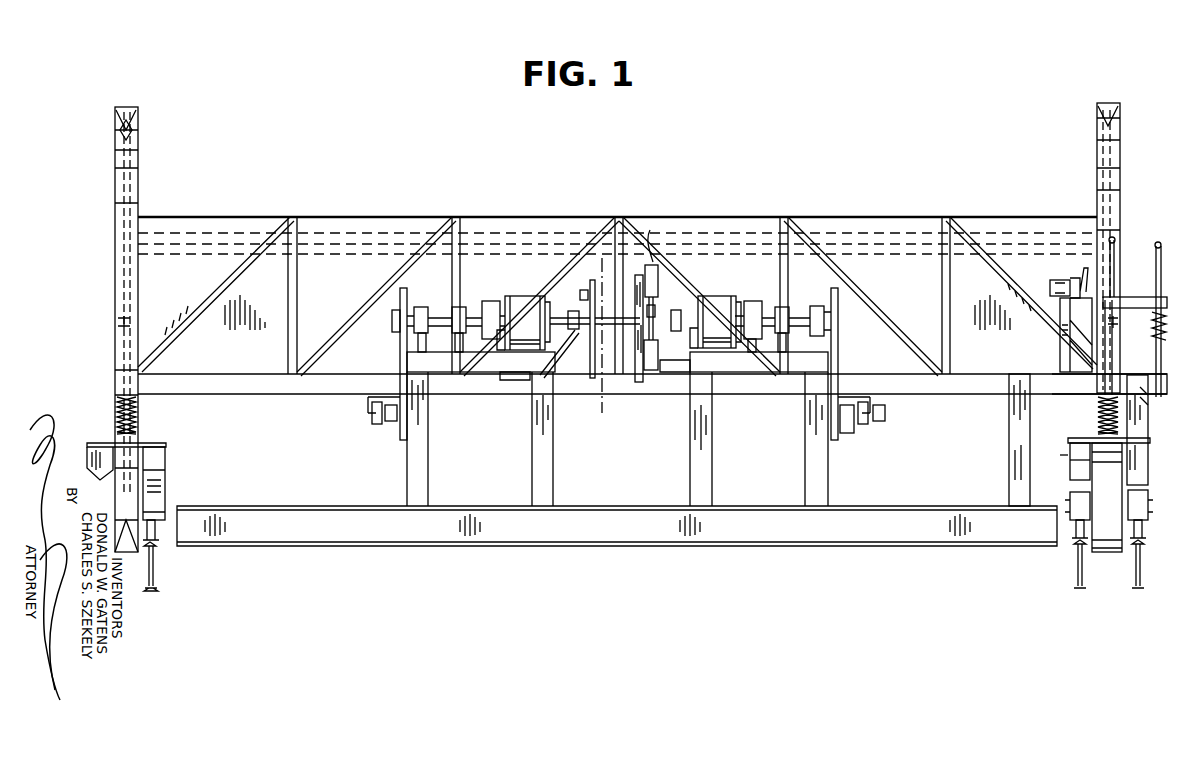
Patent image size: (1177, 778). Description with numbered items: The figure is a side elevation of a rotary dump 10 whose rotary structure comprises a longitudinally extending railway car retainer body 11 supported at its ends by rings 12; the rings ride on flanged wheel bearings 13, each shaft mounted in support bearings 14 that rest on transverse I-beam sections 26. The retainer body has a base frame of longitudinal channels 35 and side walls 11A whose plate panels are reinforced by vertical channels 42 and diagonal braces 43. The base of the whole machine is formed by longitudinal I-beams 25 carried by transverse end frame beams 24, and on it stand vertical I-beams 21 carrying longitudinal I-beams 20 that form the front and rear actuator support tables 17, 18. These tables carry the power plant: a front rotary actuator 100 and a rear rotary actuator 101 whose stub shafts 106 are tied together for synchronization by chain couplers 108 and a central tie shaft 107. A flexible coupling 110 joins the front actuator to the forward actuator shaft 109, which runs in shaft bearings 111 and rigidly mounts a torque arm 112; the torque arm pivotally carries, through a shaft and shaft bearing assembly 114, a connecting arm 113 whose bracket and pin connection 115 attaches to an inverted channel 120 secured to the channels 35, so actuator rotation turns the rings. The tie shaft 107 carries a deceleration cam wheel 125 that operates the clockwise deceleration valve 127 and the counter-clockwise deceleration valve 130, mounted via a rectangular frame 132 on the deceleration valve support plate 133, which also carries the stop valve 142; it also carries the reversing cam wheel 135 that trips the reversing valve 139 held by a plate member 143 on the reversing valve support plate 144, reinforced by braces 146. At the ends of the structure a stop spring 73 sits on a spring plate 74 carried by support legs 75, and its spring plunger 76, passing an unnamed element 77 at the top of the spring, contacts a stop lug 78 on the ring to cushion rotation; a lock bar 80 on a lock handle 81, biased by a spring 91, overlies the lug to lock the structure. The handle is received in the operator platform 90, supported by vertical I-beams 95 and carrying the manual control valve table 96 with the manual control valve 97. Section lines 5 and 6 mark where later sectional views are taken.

The rotary dump 10 is at (103, 150).
The railway car retainer body 11 is at (840, 214).
The walls 11A is at (483, 217).
The rings 12 is at (138, 148).
The wheel bearings 13 is at (1098, 486).
The support bearings 14 is at (1070, 505).
The front actuator support table 17 is at (686, 449).
The rear actuator support table 18 is at (555, 447).
The longitudinally extending I-beams 20 is at (440, 363).
The vertically extending I-beams 21 is at (407, 470).
The transversely extending I-beams 24 is at (155, 565).
The longitudinally extending I-beams 25 is at (358, 512).
The I-beam sections 26 is at (160, 535).
The channels 35 is at (193, 396).
The channels 42 is at (292, 217).
The diagonal braces 43 is at (196, 330).
The stop spring 73 is at (138, 412).
The spring plate 74 is at (162, 446).
The support legs 75 is at (165, 467).
The spring plunger 76 is at (120, 356).
The collar 77 is at (115, 393).
The stop lug 78 is at (118, 322).
The lock bar 80 is at (1128, 304).
The lock handle 81 is at (1156, 267).
The operator platform 90 is at (1050, 374).
The spring 91 is at (1152, 336).
The vertical I-beams 95 is at (1009, 433).
The manual control valve table 96 is at (1062, 318).
The manual control valve 97 is at (1072, 282).
The front rotary actuator 100 is at (722, 300).
The rear rotary actuator 101 is at (536, 301).
The stub shafts 106 is at (681, 320).
The central tie shaft 107 is at (646, 270).
The chain couplers 108 is at (586, 310).
The forward actuator shaft 109 is at (392, 322).
The flexible coupling 110 is at (460, 307).
The shaft bearings 111 is at (422, 307).
The torque arm 112 is at (400, 360).
The connecting arm 113 is at (386, 420).
The shaft and shaft bearing assembly 114 is at (848, 433).
The bracket and pin connection 115 is at (372, 412).
The inverted channel 120 is at (368, 402).
The deceleration cam wheel 125 is at (653, 316).
The clockwise deceleration valve 127 is at (653, 230).
The counter-clockwise deceleration valve 130 is at (640, 384).
The rectangular frame 132 is at (633, 384).
The deceleration valve support plate 133 is at (720, 374).
The reversing cam wheel 135 is at (600, 386).
The reversing valve 139 is at (585, 286).
The stop valve 142 is at (668, 366).
The plate member 143 is at (592, 380).
The reversing valve support plate 144 is at (522, 374).
The braces 146 is at (582, 332).
The section line 5- 5 is at (667, 265).
The section line 6- 6 is at (601, 265).